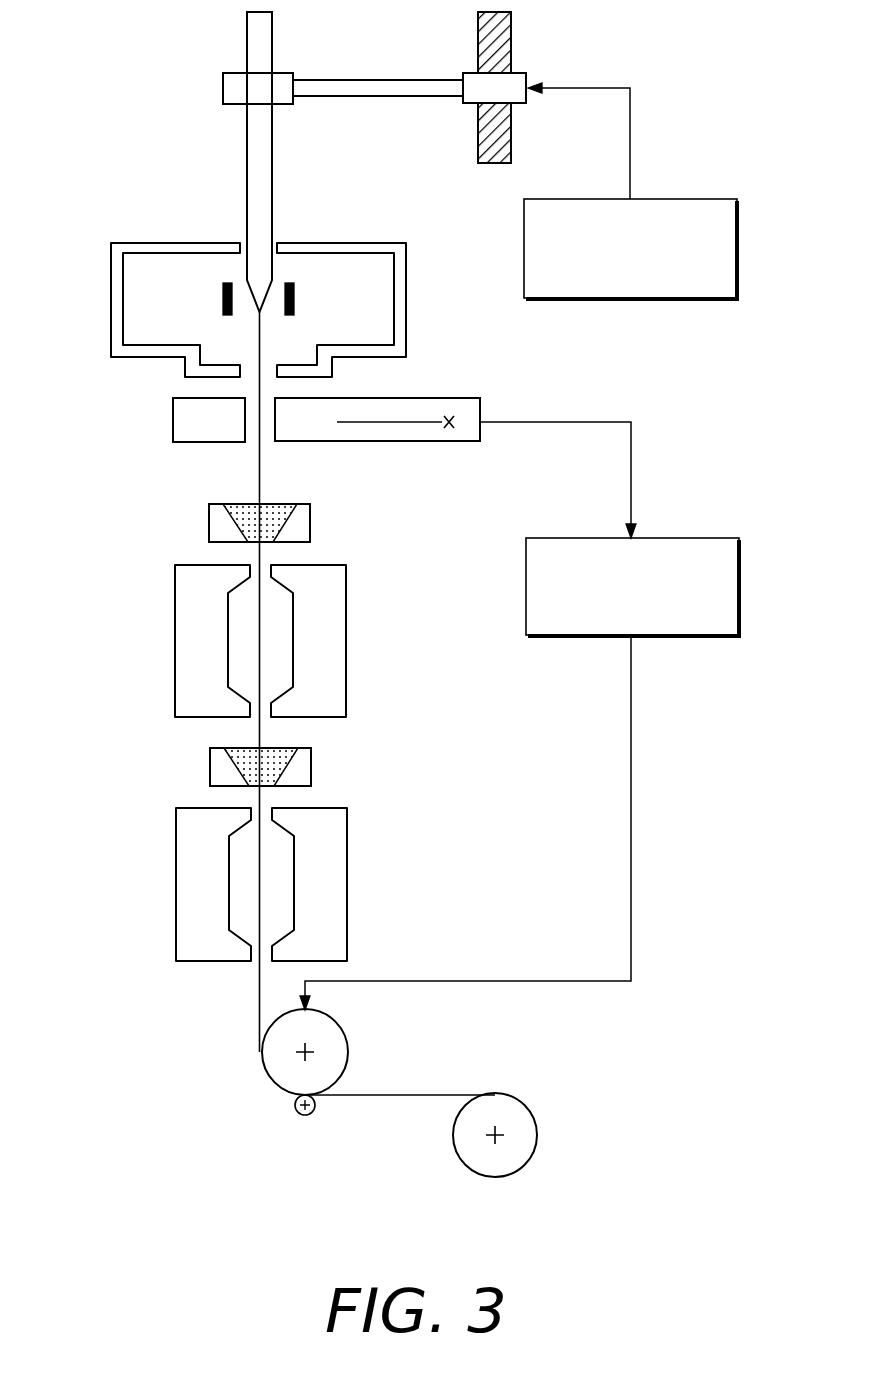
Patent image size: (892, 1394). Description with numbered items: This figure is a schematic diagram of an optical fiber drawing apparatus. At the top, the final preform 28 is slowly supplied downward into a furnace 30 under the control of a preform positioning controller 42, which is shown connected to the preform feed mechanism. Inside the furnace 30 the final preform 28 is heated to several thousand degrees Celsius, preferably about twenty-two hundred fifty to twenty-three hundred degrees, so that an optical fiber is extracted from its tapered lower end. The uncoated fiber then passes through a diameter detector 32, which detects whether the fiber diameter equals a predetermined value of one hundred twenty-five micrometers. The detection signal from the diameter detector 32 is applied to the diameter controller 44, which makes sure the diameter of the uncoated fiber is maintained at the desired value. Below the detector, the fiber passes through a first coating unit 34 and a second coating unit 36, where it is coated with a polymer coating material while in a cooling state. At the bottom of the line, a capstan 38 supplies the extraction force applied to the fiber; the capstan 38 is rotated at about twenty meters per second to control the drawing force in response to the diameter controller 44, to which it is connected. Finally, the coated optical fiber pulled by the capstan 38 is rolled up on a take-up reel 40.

The final preform 28 is at (246, 146).
The furnace 30 is at (111, 296).
The diameter detector 32 is at (173, 419).
The first coating unit 34 is at (148, 503).
The second coating unit 36 is at (148, 748).
The capstan 38 is at (270, 1078).
The take-up reel 40 is at (493, 1177).
The preform positioning controller 42 is at (739, 248).
The diameter controller 44 is at (741, 588).